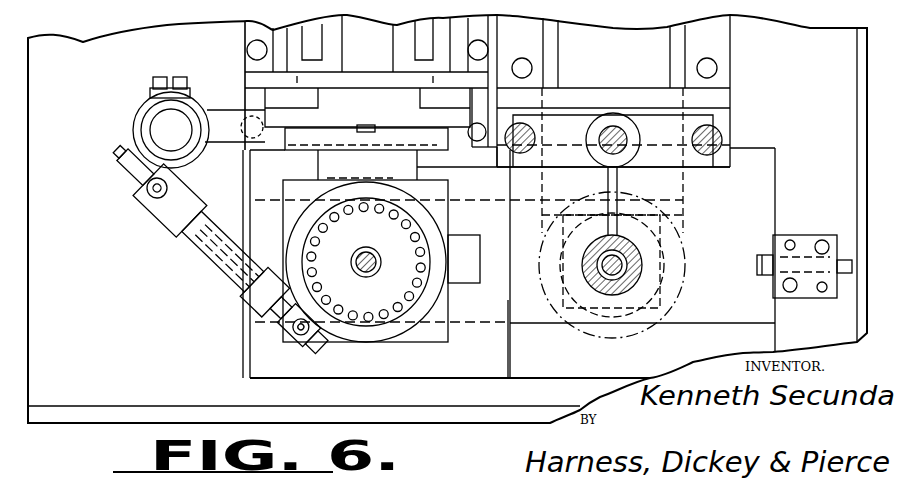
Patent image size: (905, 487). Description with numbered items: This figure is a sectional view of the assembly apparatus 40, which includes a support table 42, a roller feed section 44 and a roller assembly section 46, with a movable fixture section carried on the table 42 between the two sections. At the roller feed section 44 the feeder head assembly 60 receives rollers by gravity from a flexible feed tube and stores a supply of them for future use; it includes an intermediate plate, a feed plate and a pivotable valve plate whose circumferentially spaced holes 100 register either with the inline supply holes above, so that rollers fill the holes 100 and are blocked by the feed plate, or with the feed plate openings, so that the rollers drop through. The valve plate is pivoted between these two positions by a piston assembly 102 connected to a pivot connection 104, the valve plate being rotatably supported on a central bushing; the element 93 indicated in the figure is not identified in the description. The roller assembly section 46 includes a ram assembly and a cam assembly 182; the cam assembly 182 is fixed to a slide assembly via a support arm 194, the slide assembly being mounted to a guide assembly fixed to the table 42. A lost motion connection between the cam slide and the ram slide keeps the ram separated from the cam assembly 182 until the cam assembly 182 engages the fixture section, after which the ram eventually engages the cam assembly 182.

The assembly apparatus 40 is at (228, 317).
The support table 42 is at (128, 417).
The roller feed section 44 is at (420, 370).
The roller assembly section 46 is at (595, 352).
The feeder head assembly 60 is at (420, 325).
The hub 93 is at (393, 225).
The holes 100 is at (425, 250).
The piston assembly 102 is at (182, 235).
The pivot connection 104 is at (283, 332).
The cam assembly 182 is at (662, 142).
The support arm 194 is at (623, 182).